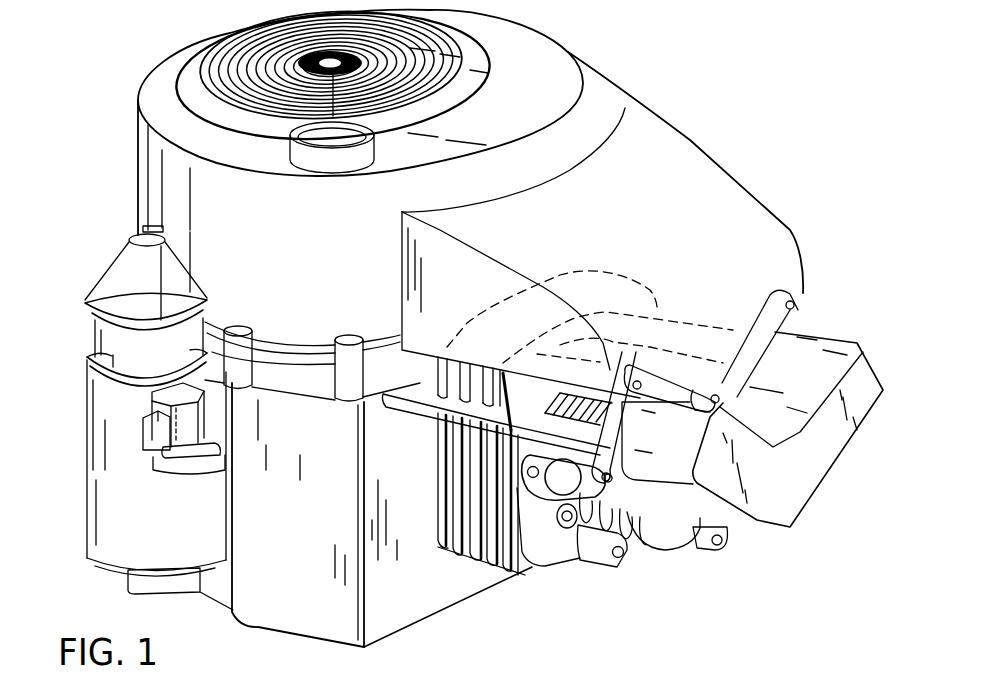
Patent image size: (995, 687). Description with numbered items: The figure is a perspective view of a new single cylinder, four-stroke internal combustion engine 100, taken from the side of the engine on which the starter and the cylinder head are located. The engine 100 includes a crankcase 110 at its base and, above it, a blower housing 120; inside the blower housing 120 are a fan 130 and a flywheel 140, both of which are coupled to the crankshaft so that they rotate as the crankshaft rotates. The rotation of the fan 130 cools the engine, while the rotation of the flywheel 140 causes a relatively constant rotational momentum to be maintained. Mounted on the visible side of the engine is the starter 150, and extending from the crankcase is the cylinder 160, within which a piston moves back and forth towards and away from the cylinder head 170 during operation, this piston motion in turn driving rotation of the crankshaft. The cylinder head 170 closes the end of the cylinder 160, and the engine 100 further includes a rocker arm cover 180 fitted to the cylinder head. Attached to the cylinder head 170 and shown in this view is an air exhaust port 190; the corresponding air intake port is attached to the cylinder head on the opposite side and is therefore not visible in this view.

The engine 100 is at (740, 70).
The crankcase 110 is at (266, 628).
The blower housing 120 is at (158, 76).
The fan 130 is at (545, 36).
The flywheel 140 is at (331, 65).
The starter 150 is at (97, 565).
The cylinder 160 is at (458, 570).
The cylinder head 170 is at (650, 535).
The rocker arm cover 180 is at (818, 503).
The air exhaust port 190 is at (522, 540).